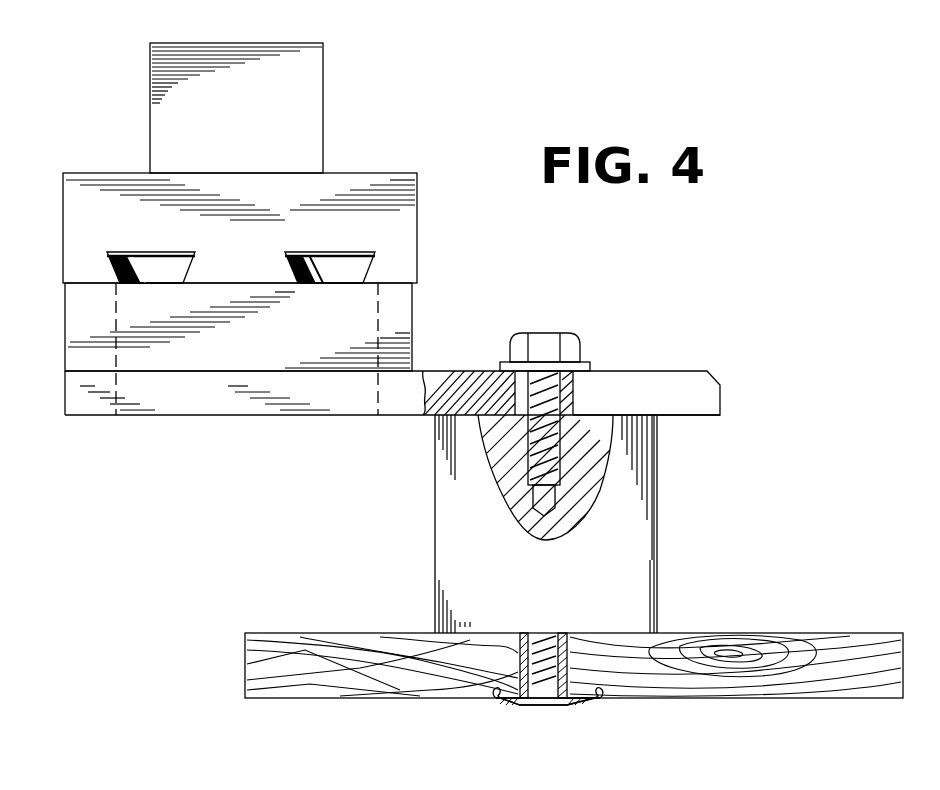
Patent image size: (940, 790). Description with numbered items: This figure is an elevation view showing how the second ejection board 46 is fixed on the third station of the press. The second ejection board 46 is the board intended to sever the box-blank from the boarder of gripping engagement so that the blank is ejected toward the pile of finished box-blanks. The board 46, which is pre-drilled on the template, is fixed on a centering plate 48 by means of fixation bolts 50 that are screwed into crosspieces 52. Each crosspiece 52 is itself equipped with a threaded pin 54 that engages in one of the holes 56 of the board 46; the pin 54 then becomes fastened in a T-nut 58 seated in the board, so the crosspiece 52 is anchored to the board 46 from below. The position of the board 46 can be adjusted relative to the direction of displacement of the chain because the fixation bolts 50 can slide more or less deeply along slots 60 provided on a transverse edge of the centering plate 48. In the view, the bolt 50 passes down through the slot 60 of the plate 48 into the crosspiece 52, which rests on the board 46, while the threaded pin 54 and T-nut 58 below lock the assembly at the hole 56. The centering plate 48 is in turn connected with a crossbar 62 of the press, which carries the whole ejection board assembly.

The second ejection board 46 is at (720, 688).
The centering plate 48 is at (440, 405).
The fixation bolt 50 is at (572, 350).
The crosspiece 52 is at (645, 527).
The threaded pin 54 is at (535, 675).
The hole 56 is at (525, 635).
The T-nut 58 is at (587, 705).
The slot 60 is at (641, 382).
The crossbar 62 is at (402, 253).